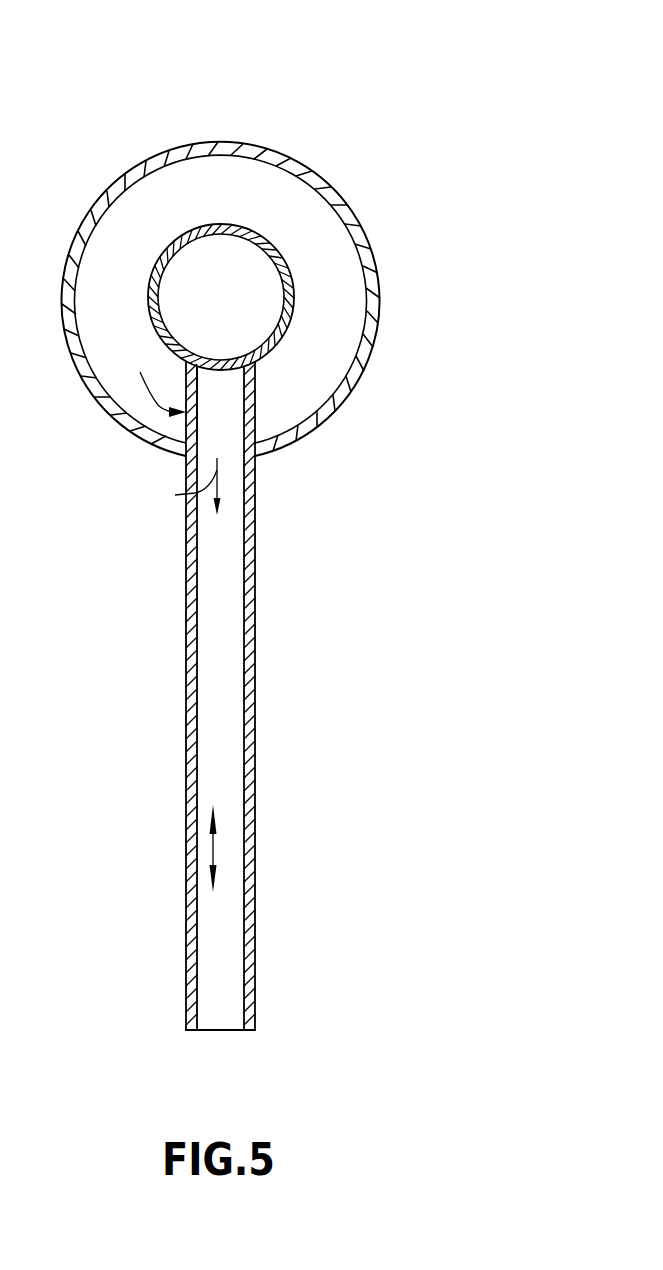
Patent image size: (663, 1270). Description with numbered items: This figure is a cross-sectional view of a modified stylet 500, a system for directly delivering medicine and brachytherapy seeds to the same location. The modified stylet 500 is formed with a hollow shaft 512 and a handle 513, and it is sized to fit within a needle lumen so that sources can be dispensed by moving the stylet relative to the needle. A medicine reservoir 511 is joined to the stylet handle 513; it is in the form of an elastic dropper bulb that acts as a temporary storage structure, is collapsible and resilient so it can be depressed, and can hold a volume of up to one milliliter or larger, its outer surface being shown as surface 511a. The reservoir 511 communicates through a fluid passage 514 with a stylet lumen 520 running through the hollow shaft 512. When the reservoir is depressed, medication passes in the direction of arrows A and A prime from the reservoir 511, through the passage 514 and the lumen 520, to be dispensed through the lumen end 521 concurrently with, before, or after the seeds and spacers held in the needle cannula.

The modified stylet 500 is at (314, 106).
The medicine reservoir 511 is at (330, 275).
The outer surface of head portion 511a is at (380, 322).
The hollow shaft 512 is at (255, 747).
The handle 513 is at (280, 347).
The fluid passage 514 is at (192, 412).
The stylet lumen 520 is at (213, 848).
The lumen end 521 is at (220, 1032).